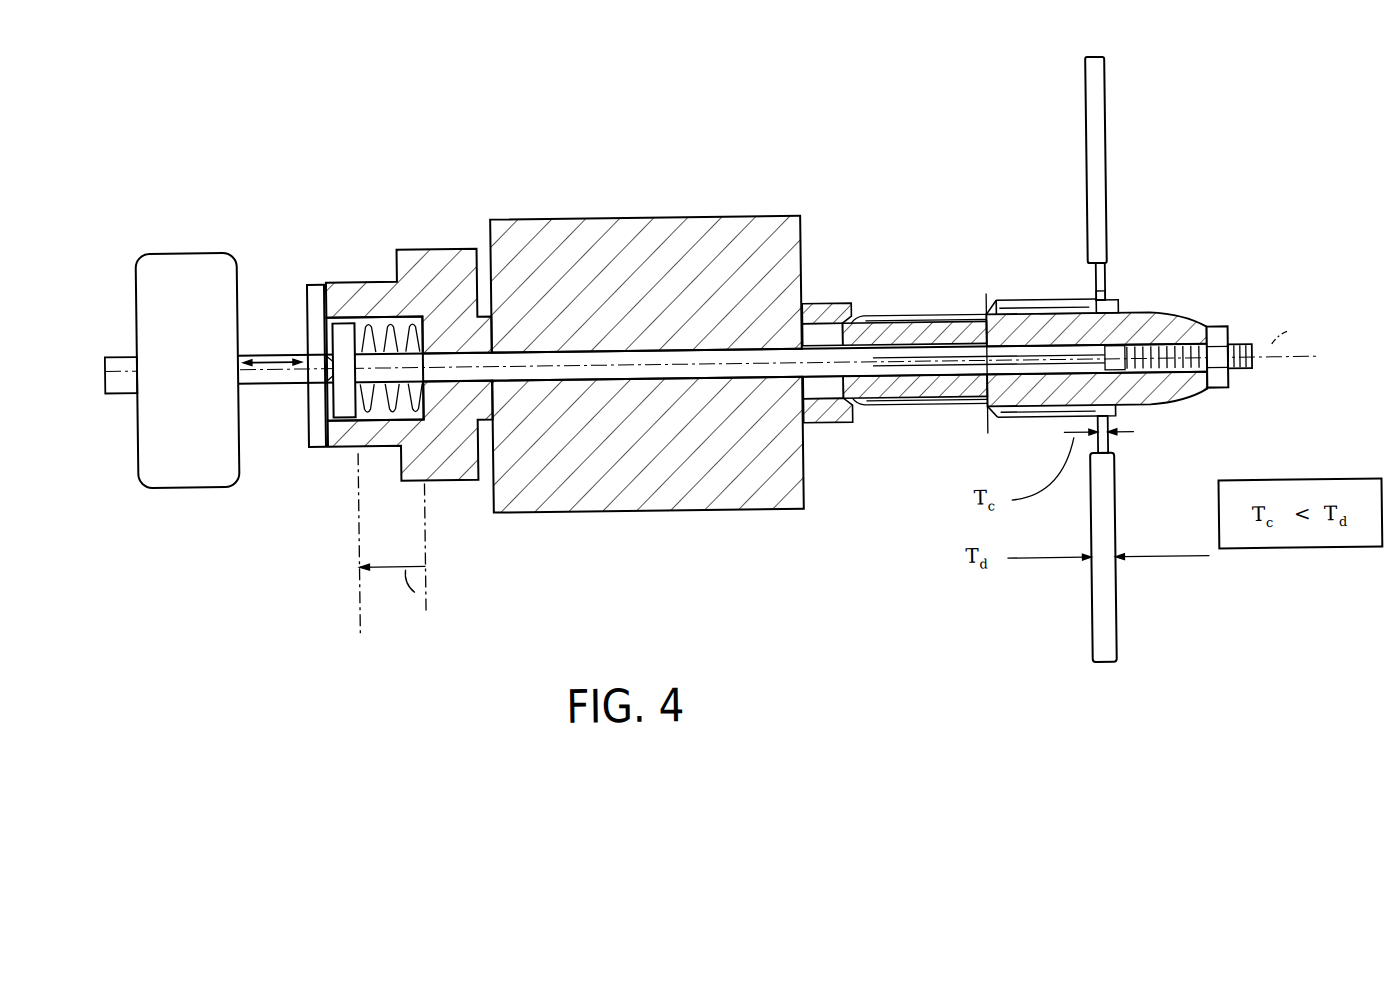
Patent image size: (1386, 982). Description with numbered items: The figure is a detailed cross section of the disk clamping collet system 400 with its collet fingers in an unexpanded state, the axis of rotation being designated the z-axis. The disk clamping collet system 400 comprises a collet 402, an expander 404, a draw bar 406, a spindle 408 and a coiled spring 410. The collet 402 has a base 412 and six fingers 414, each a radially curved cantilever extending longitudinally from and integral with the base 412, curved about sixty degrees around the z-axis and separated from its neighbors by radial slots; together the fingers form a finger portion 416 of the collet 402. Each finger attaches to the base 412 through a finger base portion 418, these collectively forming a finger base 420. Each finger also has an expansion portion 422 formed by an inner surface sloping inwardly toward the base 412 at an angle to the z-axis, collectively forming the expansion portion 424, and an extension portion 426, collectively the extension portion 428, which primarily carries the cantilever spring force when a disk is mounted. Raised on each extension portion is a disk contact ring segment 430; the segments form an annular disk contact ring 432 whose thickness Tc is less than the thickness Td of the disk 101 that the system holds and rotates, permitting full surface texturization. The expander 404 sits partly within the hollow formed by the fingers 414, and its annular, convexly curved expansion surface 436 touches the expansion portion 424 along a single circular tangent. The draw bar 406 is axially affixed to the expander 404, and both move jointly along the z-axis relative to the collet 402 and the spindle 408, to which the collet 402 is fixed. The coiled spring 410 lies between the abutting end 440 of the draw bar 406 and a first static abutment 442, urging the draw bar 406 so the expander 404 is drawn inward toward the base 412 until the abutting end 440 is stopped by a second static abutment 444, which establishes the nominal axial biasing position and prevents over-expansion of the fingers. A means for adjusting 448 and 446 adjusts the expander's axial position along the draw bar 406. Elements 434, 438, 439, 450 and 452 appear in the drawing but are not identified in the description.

The disk 101 is at (1110, 102).
The disk clamping collet system 400 is at (587, 606).
The collet 402 is at (813, 269).
The expander 404 is at (1133, 425).
The draw bar 406 is at (613, 356).
The spindle 408 is at (533, 215).
The coiled spring 410 is at (357, 443).
The base 412 is at (828, 432).
The fingers 414 is at (890, 319).
The finger portion 416 is at (870, 318).
The finger base portions 418 is at (938, 321).
The finger base 420 is at (900, 320).
The expansion portions 422 is at (993, 304).
The expansion portion 424 is at (973, 316).
The extension portions 426 is at (1053, 307).
The extension portion 428 is at (1023, 307).
The disk contact ring segments 430 is at (1103, 295).
The disk contact ring 432 is at (1108, 272).
The inner sleeve 434 is at (908, 399).
The expansion surface 436 is at (977, 413).
The lower sleeve segment 438 is at (1040, 424).
The shaft bevel 439 is at (313, 395).
The abutting end 440 is at (336, 313).
The first static abutment 442 is at (407, 296).
The second static abutment 444 is at (306, 282).
The means for adjusting 446 is at (1247, 377).
The means for adjusting 448 is at (1217, 336).
The knob 450 is at (202, 244).
The nose cone 452 is at (1183, 406).